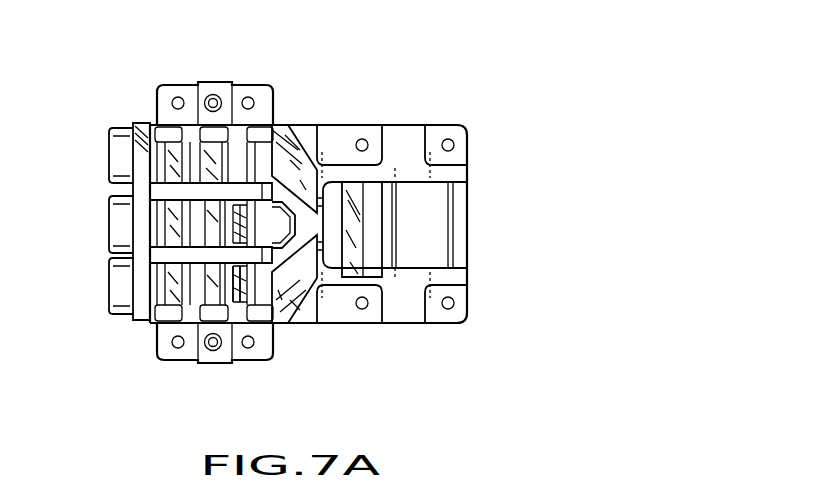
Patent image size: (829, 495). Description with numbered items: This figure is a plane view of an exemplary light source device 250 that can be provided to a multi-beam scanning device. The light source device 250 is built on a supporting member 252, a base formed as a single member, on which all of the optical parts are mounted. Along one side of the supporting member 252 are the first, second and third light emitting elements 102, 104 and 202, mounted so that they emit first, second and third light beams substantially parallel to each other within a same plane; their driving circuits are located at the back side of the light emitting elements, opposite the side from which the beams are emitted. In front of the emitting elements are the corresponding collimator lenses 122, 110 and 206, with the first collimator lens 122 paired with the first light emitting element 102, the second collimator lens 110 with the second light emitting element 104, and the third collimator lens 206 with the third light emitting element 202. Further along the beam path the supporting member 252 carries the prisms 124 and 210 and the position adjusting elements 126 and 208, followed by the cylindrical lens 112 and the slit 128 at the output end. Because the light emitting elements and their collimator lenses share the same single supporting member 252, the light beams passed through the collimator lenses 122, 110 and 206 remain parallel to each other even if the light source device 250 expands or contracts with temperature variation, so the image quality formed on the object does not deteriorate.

The light source device 250 is at (436, 82).
The supporting member 252 is at (412, 140).
The collimator lens 122 is at (148, 125).
The prism 124 is at (287, 130).
The first light emitting element 102 is at (110, 148).
The collimator lens 110 is at (188, 222).
The second light emitting element 104 is at (110, 238).
The third light emitting element 202 is at (110, 295).
The collimator lens 206 is at (148, 322).
The position adjusting element 208 is at (228, 308).
The prism 210 is at (283, 296).
The position adjusting element 126 is at (278, 285).
The cylindrical lens 112 is at (358, 275).
The slit 128 is at (372, 233).